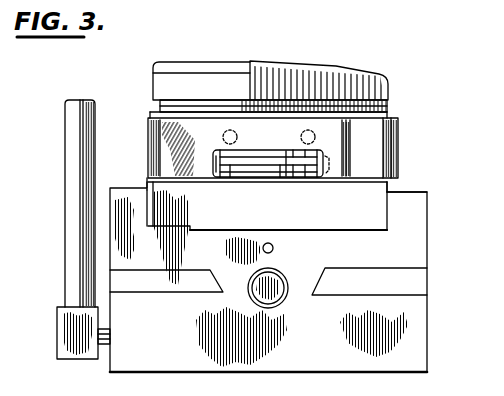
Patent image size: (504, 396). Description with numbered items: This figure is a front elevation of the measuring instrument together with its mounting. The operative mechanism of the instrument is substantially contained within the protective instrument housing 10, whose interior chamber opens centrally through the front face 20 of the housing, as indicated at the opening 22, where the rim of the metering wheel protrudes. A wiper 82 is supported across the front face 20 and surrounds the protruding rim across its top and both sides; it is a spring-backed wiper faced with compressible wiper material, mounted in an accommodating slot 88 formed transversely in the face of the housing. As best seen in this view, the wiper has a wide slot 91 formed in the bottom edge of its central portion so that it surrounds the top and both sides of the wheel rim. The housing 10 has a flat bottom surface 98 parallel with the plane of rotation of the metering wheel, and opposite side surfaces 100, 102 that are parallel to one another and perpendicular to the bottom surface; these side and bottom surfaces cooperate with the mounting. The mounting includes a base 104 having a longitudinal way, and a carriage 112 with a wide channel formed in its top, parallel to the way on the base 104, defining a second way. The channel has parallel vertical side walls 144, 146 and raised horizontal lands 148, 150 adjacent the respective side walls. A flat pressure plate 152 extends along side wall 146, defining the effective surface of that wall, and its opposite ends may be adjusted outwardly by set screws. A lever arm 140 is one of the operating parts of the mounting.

The instrument housing 10 is at (392, 116).
The front face 20 is at (278, 209).
The opening 22 is at (296, 153).
The wiper 82 is at (404, 132).
The accommodating slot 88 is at (372, 126).
The wide slot 91 is at (232, 175).
The bottom surface 98 is at (183, 232).
The side surface 100 is at (147, 180).
The side surface 102 is at (403, 186).
The base 104 is at (403, 349).
The carriage 112 is at (411, 258).
The lever arm 140 is at (80, 172).
The side wall 144 is at (386, 201).
The side wall 146 is at (147, 204).
The land 148 is at (375, 226).
The land 150 is at (170, 262).
The pressure plate 152 is at (151, 250).